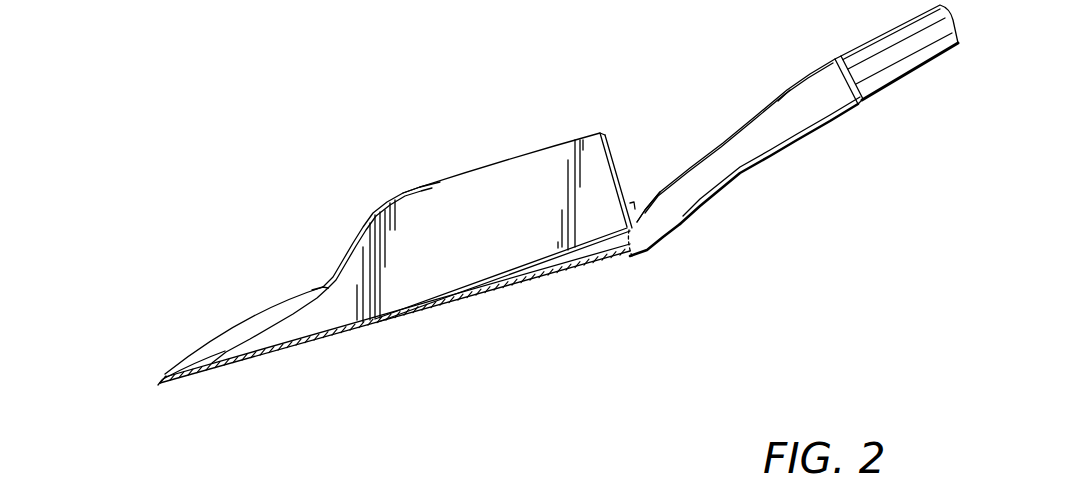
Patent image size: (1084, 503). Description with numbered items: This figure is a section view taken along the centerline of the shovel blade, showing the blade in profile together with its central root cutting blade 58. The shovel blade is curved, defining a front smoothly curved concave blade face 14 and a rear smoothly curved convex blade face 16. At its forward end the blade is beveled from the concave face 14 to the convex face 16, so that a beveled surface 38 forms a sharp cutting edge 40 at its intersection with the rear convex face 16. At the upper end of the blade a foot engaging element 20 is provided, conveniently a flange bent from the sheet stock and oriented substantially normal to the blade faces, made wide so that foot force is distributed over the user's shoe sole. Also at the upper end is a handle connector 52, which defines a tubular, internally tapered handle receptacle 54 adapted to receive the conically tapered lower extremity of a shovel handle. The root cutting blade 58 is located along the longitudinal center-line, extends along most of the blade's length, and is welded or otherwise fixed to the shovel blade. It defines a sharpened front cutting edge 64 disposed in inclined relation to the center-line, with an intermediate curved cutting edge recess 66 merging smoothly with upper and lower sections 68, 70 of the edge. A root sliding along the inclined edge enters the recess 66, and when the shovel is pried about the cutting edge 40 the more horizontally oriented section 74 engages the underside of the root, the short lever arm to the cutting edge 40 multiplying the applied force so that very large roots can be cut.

The front concave blade face 14 is at (223, 337).
The rear convex blade face 16 is at (332, 341).
The foot engaging element 20 is at (637, 207).
The beveled surface 38 is at (162, 374).
The sharp cutting edge 40 is at (160, 384).
The handle connector 52 is at (643, 263).
The handle receptacle 54 is at (803, 137).
The root cutting blade 58 is at (559, 160).
The front cutting edge 64 is at (397, 190).
The curved cutting edge recess 66 is at (315, 288).
The upper section of the front cutting edge 68 is at (372, 212).
The lower section of the front cutting edge 70 is at (222, 352).
The more horizontally oriented section 74 is at (267, 320).